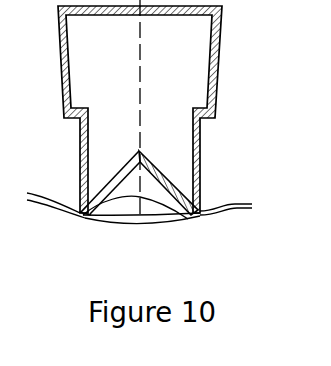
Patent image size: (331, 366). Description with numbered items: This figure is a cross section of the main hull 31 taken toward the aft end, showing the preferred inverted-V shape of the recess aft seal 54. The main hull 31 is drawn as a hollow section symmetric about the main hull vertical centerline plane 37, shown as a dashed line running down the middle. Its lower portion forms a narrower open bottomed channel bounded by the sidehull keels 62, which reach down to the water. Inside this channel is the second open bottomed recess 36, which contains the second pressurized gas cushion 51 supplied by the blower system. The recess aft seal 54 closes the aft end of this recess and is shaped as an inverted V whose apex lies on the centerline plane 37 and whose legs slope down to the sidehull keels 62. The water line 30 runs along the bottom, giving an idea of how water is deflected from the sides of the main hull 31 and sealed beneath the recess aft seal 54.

The water line 30 is at (57, 193).
The main hull 31 is at (61, 68).
The second open bottomed recess 36 is at (188, 219).
The main hull vertical centerline plane 37 is at (141, 56).
The second pressurized gas cushion 51 is at (157, 197).
The recess aft seal 54 is at (107, 200).
The sidehull keels 62 is at (85, 219).